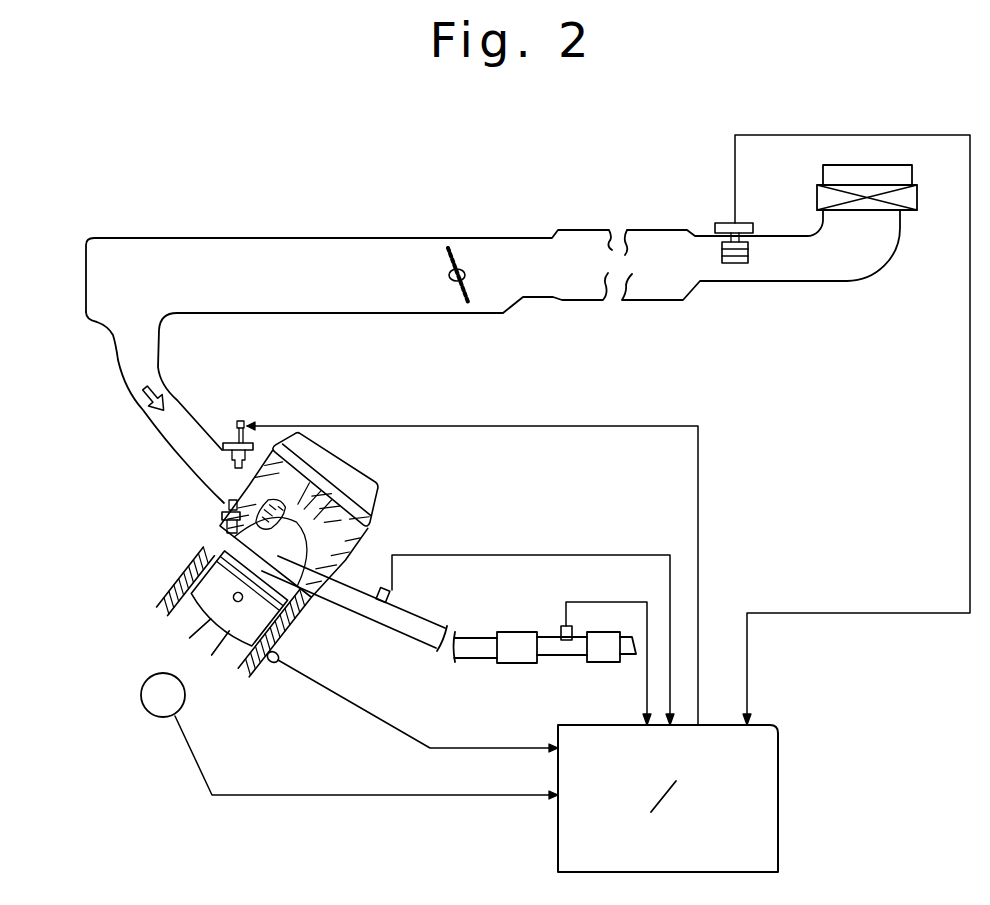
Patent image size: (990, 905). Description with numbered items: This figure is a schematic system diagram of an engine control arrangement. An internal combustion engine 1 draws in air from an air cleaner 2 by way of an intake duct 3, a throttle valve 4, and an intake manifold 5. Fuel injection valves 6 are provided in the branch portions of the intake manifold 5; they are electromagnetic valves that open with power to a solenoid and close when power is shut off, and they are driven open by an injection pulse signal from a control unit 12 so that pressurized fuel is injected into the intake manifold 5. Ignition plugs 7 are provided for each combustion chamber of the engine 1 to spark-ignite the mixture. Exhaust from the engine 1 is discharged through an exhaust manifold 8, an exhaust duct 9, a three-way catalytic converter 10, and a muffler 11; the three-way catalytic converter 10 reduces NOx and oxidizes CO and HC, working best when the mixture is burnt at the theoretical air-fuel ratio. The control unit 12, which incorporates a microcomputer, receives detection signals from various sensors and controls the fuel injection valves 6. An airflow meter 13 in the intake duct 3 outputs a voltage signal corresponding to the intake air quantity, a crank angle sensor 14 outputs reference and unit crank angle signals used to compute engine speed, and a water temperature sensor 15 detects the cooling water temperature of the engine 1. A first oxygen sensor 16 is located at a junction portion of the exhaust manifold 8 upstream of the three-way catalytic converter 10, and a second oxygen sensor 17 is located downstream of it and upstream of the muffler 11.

The internal combustion engine 1 is at (377, 550).
The air cleaner 2 is at (917, 206).
The intake duct 3 is at (648, 228).
The throttle valve 4 is at (454, 312).
The intake manifold 5 is at (113, 348).
The fuel injection valve 6 is at (237, 421).
The ignition plug 7 is at (222, 500).
The exhaust manifold 8 is at (380, 622).
The exhaust duct 9 is at (482, 660).
The three-way catalytic converter 10 is at (530, 630).
The muffler 11 is at (603, 653).
The control unit 12 is at (778, 770).
The airflow meter 13 is at (722, 222).
The crank angle sensor 14 is at (142, 700).
The water temperature sensor 15 is at (282, 658).
The first oxygen sensor 16 is at (397, 593).
The second oxygen sensor 17 is at (567, 645).